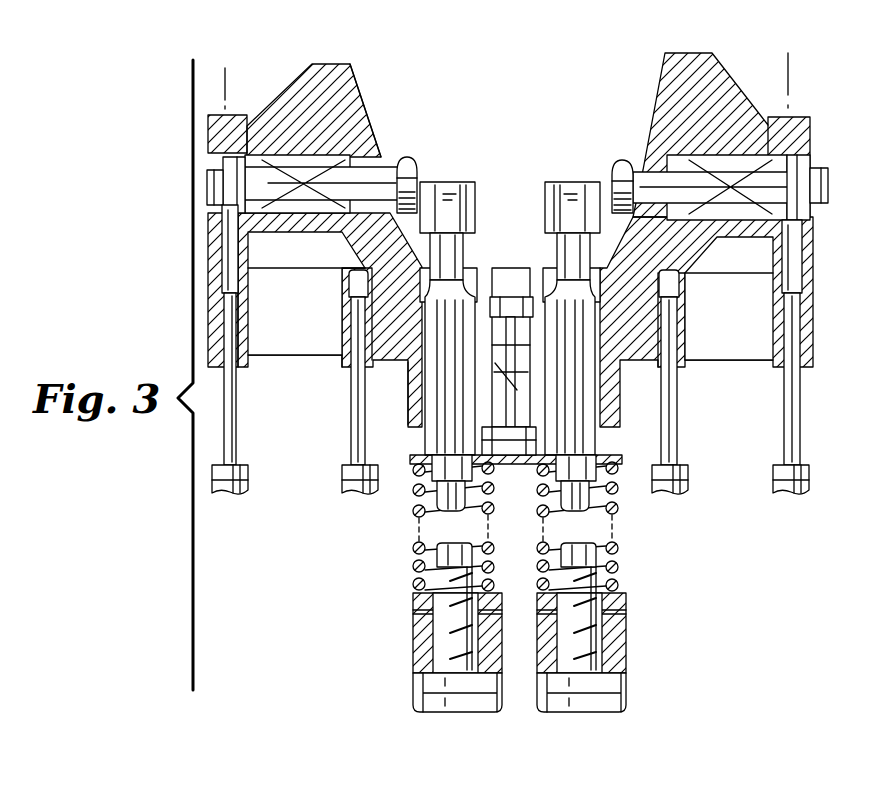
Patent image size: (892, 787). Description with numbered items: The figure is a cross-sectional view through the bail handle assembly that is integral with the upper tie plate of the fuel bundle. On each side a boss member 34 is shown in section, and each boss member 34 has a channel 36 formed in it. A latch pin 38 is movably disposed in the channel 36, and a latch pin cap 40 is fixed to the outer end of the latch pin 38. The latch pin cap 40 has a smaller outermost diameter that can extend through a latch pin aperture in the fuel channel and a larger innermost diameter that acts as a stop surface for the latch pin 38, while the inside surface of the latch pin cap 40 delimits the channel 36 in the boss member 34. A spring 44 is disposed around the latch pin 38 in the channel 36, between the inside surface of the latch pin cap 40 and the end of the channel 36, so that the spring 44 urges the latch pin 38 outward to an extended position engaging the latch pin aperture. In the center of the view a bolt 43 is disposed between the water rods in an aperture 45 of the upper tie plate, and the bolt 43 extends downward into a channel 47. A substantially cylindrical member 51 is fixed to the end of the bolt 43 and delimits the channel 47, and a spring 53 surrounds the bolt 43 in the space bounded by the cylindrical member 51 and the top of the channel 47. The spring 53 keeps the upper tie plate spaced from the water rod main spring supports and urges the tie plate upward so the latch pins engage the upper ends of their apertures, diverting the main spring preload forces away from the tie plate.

The boss member 34 is at (314, 86).
The channel 36 is at (292, 163).
The latch pin 38 is at (369, 138).
The latch pin cap 40 is at (212, 184).
The bolt 43 is at (510, 306).
The spring 44 is at (256, 219).
The aperture 45 is at (497, 360).
The channel 47 is at (410, 427).
The cylindrical member 51 is at (505, 457).
The spring 53 is at (408, 428).